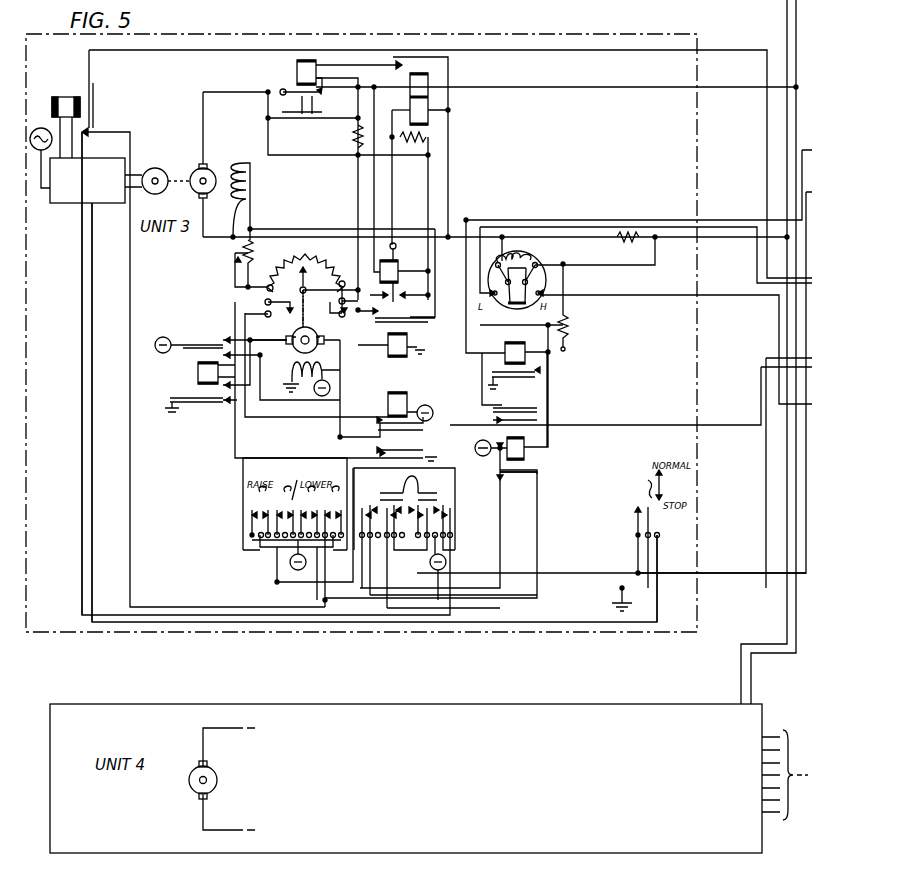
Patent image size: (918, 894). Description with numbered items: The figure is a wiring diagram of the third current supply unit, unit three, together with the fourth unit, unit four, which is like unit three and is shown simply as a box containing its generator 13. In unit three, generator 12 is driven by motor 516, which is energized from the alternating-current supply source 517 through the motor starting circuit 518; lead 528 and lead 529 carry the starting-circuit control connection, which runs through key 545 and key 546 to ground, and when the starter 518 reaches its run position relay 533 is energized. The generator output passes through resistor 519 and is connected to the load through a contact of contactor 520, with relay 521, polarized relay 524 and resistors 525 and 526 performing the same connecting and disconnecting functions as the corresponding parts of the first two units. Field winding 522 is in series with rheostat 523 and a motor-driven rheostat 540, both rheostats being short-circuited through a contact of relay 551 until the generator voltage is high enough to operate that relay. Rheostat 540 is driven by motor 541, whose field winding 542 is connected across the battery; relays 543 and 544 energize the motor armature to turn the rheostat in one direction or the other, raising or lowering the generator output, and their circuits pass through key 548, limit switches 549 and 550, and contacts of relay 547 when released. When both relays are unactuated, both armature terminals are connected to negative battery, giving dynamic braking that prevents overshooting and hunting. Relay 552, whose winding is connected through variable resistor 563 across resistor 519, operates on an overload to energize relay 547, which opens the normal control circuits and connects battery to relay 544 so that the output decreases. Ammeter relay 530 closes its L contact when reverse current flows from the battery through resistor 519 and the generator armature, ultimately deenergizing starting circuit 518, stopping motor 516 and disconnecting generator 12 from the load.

The alternating-current supply source 517 is at (44, 128).
The relay 533 is at (70, 97).
The motor starting circuit 518 is at (76, 203).
The motor 516 is at (156, 168).
The generator 12 is at (199, 170).
The field winding 522 is at (250, 163).
The rheostat 523 is at (246, 248).
The contactor 520 is at (297, 69).
The relay 521 is at (423, 80).
The resistor 526 is at (352, 138).
The resistor 525 is at (412, 143).
The polarized relay 524 is at (397, 268).
The ammeter relay 530 is at (533, 258).
The resistor 519 is at (629, 243).
The variable resistor 563 is at (567, 328).
The relay 552 is at (528, 358).
The relay 547 is at (526, 456).
The motor driven rheostat 540 is at (306, 257).
The limit switch 550 is at (330, 302).
The limit switch 549 is at (272, 315).
The motor 541 is at (297, 350).
The field winding 542 is at (308, 400).
The relay 543 is at (198, 373).
The relay 551 is at (407, 343).
The relay 544 is at (418, 390).
The key 548 is at (295, 532).
The key 545 is at (408, 482).
The key 546 is at (644, 492).
The lead 528 is at (82, 282).
The lead 529 is at (92, 285).
The generator 13 is at (195, 790).